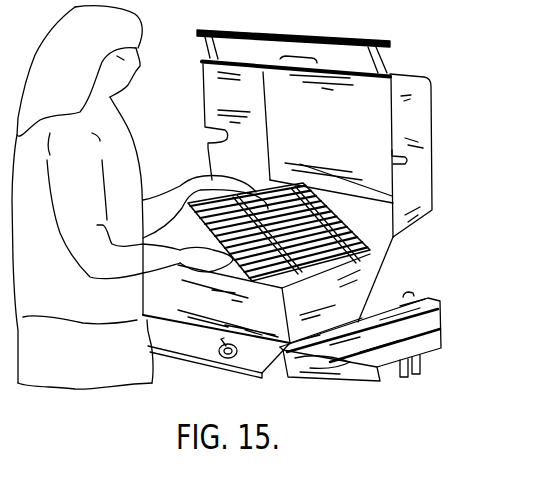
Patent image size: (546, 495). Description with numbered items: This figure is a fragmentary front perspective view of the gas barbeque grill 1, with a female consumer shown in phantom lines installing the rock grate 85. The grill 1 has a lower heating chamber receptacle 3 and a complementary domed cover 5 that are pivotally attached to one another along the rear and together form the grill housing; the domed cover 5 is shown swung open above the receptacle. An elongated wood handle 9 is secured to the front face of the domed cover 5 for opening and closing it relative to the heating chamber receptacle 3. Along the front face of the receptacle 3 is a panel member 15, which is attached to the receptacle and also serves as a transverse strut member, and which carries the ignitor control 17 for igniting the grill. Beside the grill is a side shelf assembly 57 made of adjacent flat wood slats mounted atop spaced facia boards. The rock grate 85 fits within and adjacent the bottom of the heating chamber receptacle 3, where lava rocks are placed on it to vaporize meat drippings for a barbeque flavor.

The gas barbeque grill 1 is at (363, 24).
The heating chamber receptacle 3 is at (383, 270).
The domed cover 5 is at (406, 100).
The wood handle 9 is at (277, 33).
The panel member 15 is at (197, 340).
The ignitor control 17 is at (235, 358).
The side shelf assembly 57 is at (389, 376).
The rock grate 85 is at (345, 268).